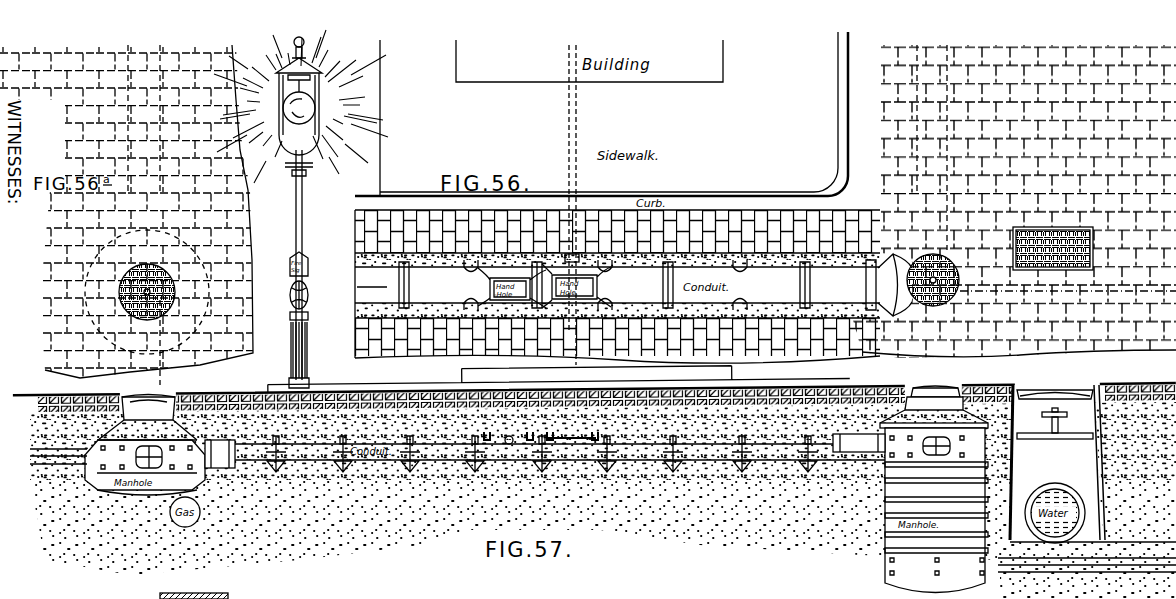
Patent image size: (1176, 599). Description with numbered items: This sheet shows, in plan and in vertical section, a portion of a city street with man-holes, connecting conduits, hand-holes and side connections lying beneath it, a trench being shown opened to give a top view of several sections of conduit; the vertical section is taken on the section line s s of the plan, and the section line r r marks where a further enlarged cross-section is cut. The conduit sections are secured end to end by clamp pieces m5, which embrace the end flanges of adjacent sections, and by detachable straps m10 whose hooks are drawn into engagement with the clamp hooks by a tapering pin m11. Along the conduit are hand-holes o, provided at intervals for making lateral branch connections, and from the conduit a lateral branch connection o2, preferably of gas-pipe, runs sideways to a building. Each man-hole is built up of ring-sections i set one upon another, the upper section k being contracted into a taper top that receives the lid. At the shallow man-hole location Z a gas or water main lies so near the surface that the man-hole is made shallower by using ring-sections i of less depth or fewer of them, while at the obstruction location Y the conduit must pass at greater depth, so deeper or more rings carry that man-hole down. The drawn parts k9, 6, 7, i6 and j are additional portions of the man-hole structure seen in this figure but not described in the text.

In FIG. 56, the section line r r is at (569, 45).
In FIG. 57, the section line r r is at (576, 470).
In FIG. 56, the lateral branch connection o2 is at (577, 131).
In FIG. 56, the clamp piece m5 is at (637, 285).
In FIG. 56, the detachable strap m10 is at (600, 285).
In FIG. 56, the tapering pin m11 is at (617, 285).
In FIG. 56A, the section line s s is at (118, 294).
In FIG. 56A, the shallow man-hole location Z is at (161, 387).
In FIG. 56, the obstruction location Y is at (954, 322).
In FIG. 57, the upper section of man-hole k is at (126, 440).
In FIG. 57, the manhole neck k9 is at (149, 436).
In FIG. 57, the manhole cover 6 is at (154, 420).
In FIG. 57, the manhole cover 7 is at (936, 400).
In FIG. 57, the ring-section i is at (537, 503).
In FIG. 57, the manhole bottom section i6 is at (937, 565).
In FIG. 57, the manhole bottom j is at (936, 513).
In FIG. 57, the hand-hole o is at (506, 446).